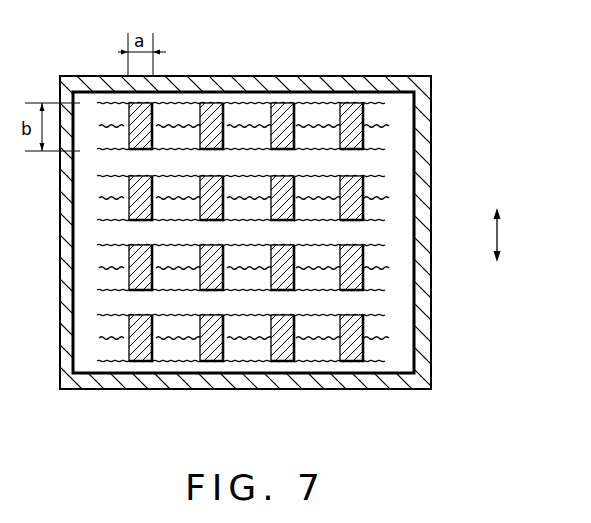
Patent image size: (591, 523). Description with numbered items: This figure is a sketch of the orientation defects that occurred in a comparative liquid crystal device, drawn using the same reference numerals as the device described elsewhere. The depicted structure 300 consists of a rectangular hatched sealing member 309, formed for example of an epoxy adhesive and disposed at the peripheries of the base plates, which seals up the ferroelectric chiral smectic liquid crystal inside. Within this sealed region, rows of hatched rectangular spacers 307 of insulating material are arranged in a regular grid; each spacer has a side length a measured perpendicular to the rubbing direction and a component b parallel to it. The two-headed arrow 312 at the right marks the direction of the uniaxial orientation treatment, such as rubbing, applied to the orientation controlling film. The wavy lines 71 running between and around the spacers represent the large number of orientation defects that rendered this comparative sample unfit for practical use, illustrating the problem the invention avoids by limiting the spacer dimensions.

The display panel unit 300 is at (299, 206).
The spacer 307 is at (352, 103).
The sealing member 309 is at (425, 322).
The two-headed arrow 312 is at (500, 233).
The liquid crystal cell layers 71 is at (183, 145).